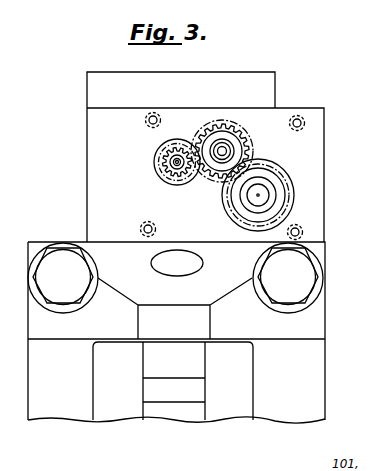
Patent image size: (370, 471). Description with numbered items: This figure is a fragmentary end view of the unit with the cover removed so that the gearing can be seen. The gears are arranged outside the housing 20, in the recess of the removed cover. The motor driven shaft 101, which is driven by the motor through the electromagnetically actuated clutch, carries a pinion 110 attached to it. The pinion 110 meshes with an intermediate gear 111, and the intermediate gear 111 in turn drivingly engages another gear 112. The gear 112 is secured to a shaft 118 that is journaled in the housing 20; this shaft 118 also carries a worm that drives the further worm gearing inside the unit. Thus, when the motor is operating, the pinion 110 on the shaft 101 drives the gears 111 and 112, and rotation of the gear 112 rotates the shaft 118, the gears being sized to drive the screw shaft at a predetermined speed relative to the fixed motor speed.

The housing 20 is at (310, 107).
The motor driven shaft 101 is at (175, 162).
The pinion 110 is at (184, 177).
The intermediate gear 111 is at (197, 134).
The gear 112 is at (234, 193).
The shaft 118 is at (260, 193).